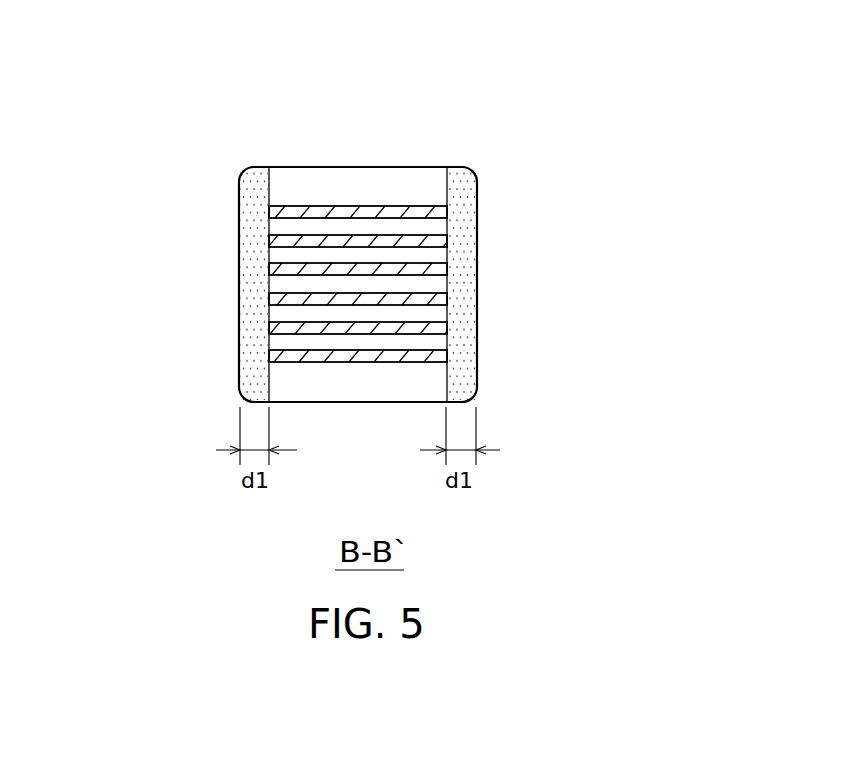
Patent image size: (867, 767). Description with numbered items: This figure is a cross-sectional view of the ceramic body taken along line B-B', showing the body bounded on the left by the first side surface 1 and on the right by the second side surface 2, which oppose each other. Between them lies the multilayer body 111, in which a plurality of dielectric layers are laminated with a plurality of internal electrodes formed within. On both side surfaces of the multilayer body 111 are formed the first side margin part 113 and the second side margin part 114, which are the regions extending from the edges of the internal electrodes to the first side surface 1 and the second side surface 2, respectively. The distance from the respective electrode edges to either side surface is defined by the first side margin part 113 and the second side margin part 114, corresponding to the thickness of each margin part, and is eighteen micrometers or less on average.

The first side surface 1 is at (225, 318).
The second side surface 2 is at (493, 268).
The multilayer body 111 is at (368, 153).
The first side margin part 113 is at (255, 167).
The second side margin part 114 is at (462, 168).